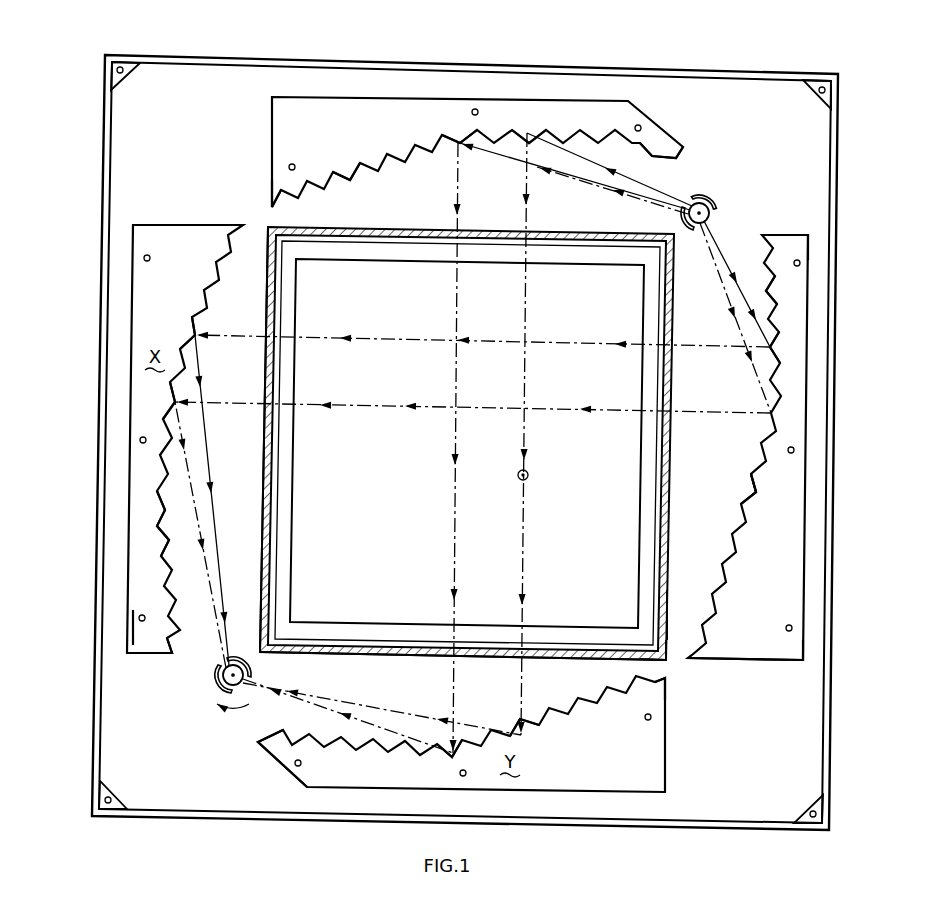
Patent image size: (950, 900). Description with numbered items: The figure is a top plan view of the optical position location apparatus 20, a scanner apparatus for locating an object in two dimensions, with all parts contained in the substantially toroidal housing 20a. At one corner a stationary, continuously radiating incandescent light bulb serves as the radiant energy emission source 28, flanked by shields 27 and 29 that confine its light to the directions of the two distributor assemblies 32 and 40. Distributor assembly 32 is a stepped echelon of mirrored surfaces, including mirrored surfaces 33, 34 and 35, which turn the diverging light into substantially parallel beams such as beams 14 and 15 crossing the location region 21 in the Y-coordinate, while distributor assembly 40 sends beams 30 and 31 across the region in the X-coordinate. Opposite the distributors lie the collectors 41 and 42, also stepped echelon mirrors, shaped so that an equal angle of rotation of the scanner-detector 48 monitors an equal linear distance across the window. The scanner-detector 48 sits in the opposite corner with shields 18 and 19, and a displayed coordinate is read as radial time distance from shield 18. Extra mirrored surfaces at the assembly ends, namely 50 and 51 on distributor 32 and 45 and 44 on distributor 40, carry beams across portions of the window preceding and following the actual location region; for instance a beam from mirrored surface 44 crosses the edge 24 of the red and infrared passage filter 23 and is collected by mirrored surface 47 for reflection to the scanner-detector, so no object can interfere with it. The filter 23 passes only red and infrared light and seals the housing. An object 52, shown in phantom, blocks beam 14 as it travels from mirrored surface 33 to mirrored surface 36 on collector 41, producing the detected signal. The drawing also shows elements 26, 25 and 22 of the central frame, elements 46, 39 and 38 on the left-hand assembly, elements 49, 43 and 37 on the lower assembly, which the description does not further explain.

The optical position location apparatus 20 is at (704, 60).
The housing 20a is at (757, 797).
The distributor assembly 32 is at (592, 105).
The mirrored surface 35 is at (346, 166).
The mirrored surface 34 is at (459, 141).
The mirrored surface 33 is at (528, 132).
The mirrored surface at end B 50 is at (668, 150).
The mirrored surface at end A 51 is at (270, 203).
The left toothed plate 46 is at (236, 228).
The tooth 39 is at (195, 332).
The tooth 38 is at (174, 403).
The collector 42 is at (130, 628).
The mirrored surface 47 is at (185, 652).
The distributor assembly 40 is at (785, 540).
The mirrored surface 45 is at (764, 243).
The mirrored surface at end A 44 is at (705, 661).
The beam 30 is at (752, 300).
The beam 31 is at (773, 347).
The collector 41 is at (625, 770).
The plate end 49 is at (270, 765).
The plate end 43 is at (662, 692).
The mirrored surface 36 is at (523, 732).
The tooth 37 is at (454, 758).
The central frame 26 is at (385, 232).
The location region 21 is at (645, 548).
The frame side 25 is at (265, 550).
The edge of filter 24 is at (624, 657).
The frame corner 22 is at (672, 658).
The red and infrared passage filter 23 is at (670, 608).
The object 52 is at (527, 478).
The radiant energy emission source 28 is at (718, 217).
The shield 27 is at (715, 197).
The shield 29 is at (697, 238).
The radiant energy beam 14 is at (633, 183).
The beam 15 is at (568, 178).
The shield 18 is at (221, 670).
The scanner-detector 48 is at (234, 703).
The shield 19 is at (218, 708).